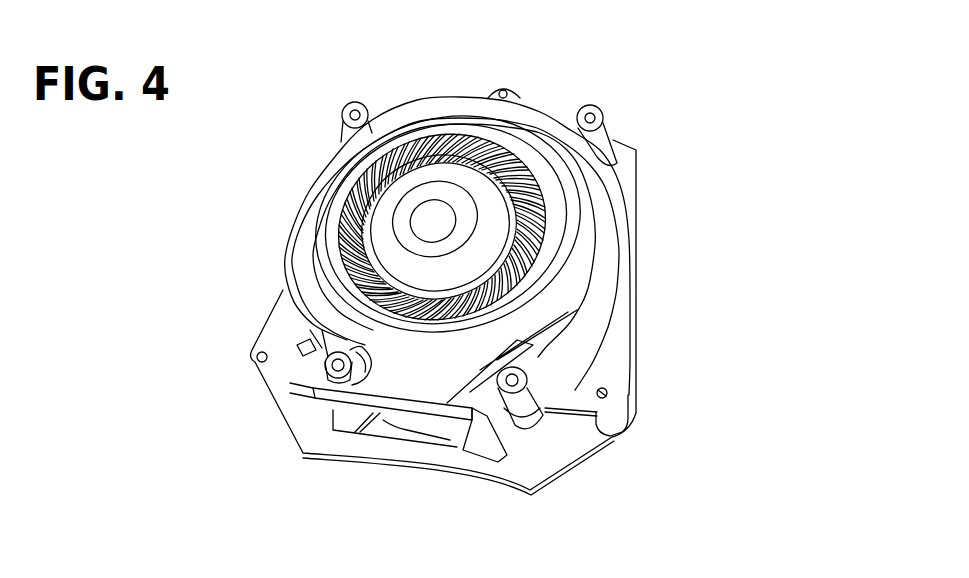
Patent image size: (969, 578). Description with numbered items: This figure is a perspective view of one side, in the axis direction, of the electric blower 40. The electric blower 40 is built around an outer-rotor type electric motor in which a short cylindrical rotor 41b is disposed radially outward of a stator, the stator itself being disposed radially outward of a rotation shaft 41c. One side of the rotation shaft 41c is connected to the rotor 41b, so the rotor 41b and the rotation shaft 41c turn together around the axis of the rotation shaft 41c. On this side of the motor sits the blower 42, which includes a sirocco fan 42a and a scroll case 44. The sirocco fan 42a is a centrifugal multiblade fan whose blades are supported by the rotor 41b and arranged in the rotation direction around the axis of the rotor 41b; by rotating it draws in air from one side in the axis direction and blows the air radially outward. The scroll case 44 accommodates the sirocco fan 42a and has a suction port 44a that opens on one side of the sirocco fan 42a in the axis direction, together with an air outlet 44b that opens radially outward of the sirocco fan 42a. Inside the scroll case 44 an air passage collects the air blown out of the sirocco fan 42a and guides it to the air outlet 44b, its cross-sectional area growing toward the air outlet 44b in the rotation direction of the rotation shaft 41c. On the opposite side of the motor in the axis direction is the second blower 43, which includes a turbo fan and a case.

The electric blower 40 is at (290, 483).
The rotor 41b is at (484, 192).
The rotation shaft 41c is at (431, 220).
The blower 42 is at (745, 213).
The sirocco fan 42a is at (487, 245).
The blower 43 is at (553, 448).
The scroll case 44 is at (577, 227).
The suction port 44a is at (373, 293).
The air outlet 44b is at (402, 423).